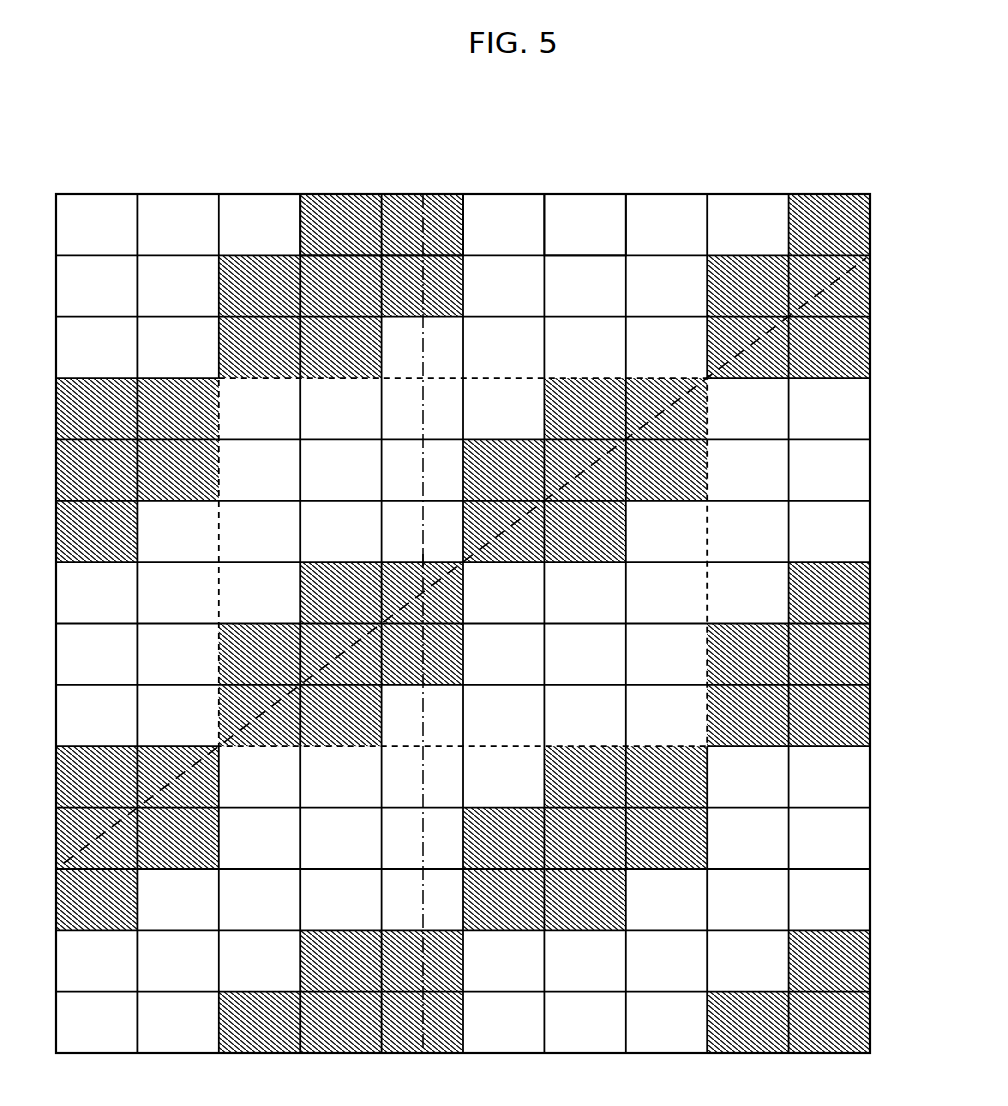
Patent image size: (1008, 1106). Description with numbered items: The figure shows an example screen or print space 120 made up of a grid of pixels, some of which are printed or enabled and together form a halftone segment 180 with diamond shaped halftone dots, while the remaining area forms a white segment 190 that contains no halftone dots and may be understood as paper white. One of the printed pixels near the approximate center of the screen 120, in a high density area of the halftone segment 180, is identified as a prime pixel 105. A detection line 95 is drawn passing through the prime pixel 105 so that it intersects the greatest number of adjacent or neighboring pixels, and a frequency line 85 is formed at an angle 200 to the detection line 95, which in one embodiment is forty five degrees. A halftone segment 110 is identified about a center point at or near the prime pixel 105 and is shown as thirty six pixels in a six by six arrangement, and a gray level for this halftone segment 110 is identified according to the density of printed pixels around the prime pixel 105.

The screen or print space 120 is at (853, 117).
The halftone segment 180 is at (386, 179).
The white segment 190 is at (608, 179).
The detection line 95 is at (177, 759).
The halftone segment 110 is at (727, 598).
The frequency line 85 is at (406, 784).
The prime pixel 105 is at (450, 601).
The angle 200 is at (462, 557).